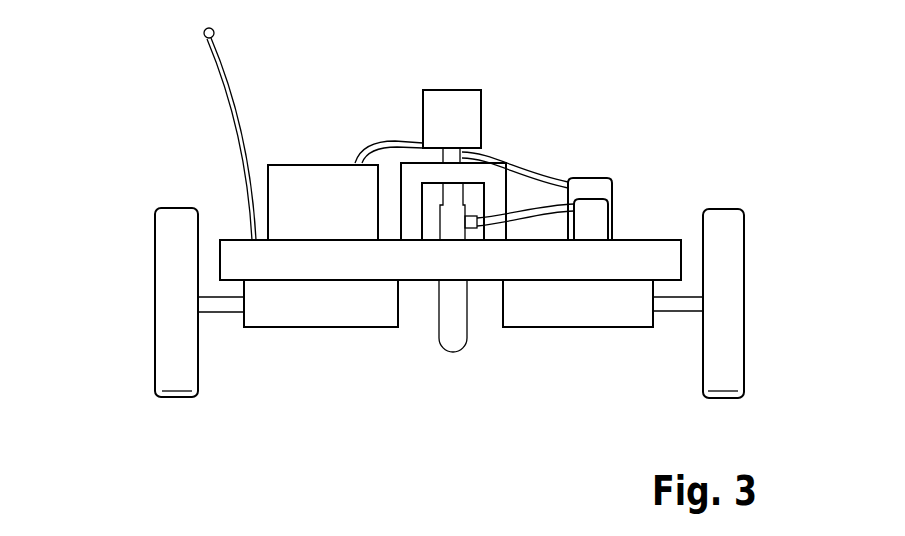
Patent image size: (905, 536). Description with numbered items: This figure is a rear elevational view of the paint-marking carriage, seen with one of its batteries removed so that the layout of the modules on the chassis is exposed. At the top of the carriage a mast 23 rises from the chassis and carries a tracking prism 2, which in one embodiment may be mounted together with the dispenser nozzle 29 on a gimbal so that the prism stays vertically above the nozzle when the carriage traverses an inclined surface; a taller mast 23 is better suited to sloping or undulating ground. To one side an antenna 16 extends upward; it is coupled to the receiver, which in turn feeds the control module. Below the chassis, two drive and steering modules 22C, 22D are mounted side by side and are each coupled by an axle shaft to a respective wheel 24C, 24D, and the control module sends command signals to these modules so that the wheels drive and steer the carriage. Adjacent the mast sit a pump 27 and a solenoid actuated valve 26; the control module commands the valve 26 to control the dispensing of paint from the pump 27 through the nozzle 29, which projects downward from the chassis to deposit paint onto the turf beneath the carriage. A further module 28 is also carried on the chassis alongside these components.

The tracking prism 2 is at (473, 100).
The antenna 16 is at (215, 34).
The drive and steering module 22C is at (321, 303).
The drive and steering module 22D is at (578, 303).
The mast 23 is at (485, 152).
The wheel 24C is at (158, 348).
The wheel 24D is at (735, 347).
The solenoid actuated valve 26 is at (605, 217).
The pump 27 is at (587, 187).
The battery 28 is at (345, 190).
The nozzle 29 is at (440, 343).